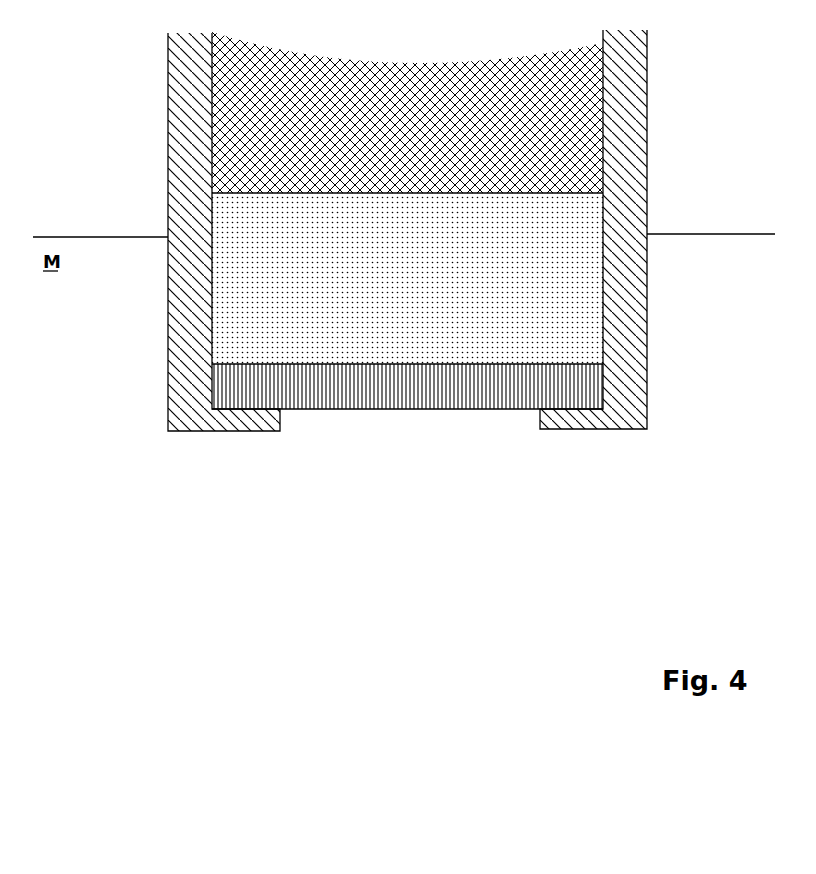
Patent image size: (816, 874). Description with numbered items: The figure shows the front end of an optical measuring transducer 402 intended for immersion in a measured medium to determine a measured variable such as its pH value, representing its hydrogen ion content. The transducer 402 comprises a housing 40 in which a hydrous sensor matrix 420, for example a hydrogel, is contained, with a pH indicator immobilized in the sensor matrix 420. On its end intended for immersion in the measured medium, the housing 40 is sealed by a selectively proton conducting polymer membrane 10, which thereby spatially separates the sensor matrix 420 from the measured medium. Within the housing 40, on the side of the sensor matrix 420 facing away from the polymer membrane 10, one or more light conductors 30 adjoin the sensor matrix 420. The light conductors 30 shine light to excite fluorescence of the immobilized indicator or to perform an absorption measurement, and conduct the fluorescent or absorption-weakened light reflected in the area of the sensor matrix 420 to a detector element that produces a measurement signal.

The housing 40 is at (197, 420).
The light conductors 30 is at (273, 87).
The sensor matrix 420 is at (233, 310).
The polymer membrane 10 is at (447, 383).
The optical measuring transducer 402 is at (527, 470).